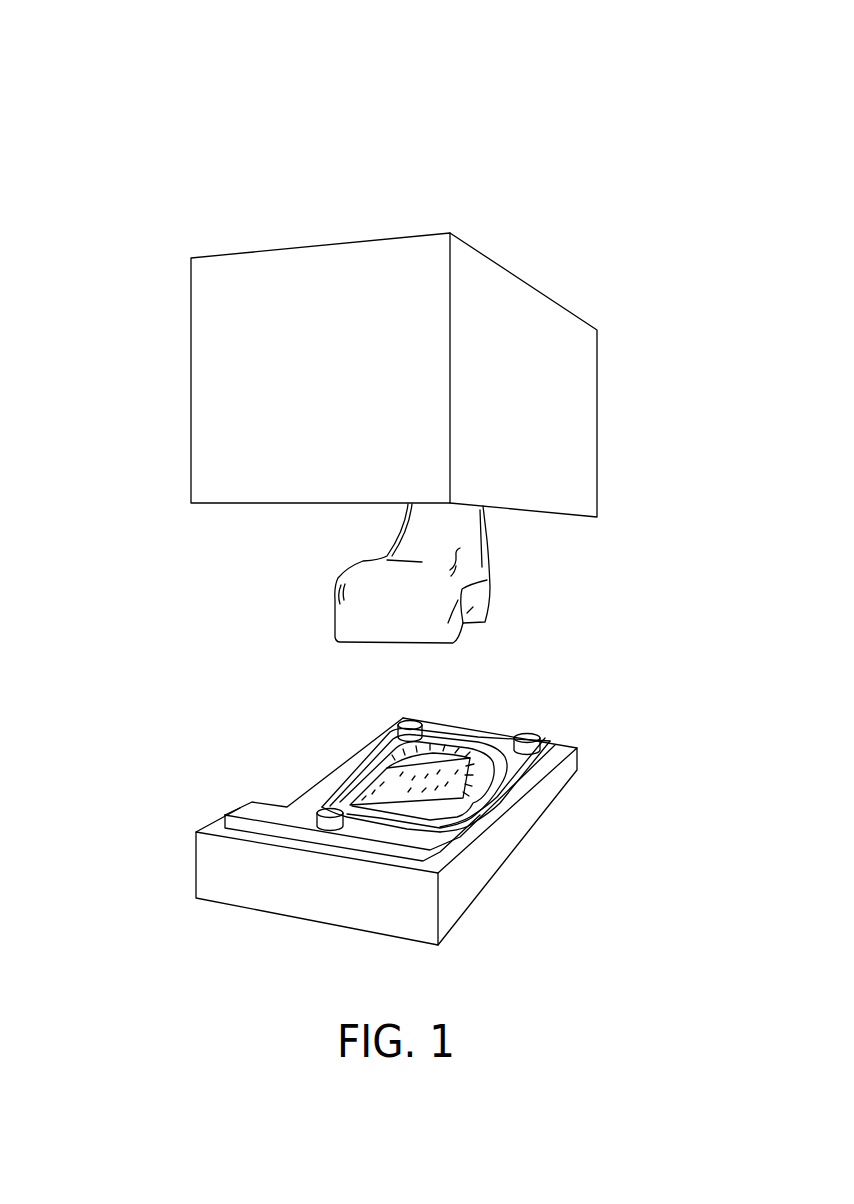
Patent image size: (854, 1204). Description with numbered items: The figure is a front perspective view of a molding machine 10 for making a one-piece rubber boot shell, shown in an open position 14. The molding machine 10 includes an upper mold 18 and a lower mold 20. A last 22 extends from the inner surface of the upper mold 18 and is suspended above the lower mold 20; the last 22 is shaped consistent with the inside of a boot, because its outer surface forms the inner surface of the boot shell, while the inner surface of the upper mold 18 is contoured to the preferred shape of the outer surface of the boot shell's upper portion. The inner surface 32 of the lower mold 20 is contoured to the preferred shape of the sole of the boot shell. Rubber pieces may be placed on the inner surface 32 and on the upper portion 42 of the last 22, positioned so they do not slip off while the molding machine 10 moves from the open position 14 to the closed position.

The molding machine 10 is at (668, 115).
The open position 14 is at (138, 143).
The upper mold 18 is at (510, 387).
The lower mold 20 is at (210, 862).
The last 22 is at (360, 608).
The inner surface of the lower mold 32 is at (468, 786).
The upper portion of the last 42 is at (443, 540).